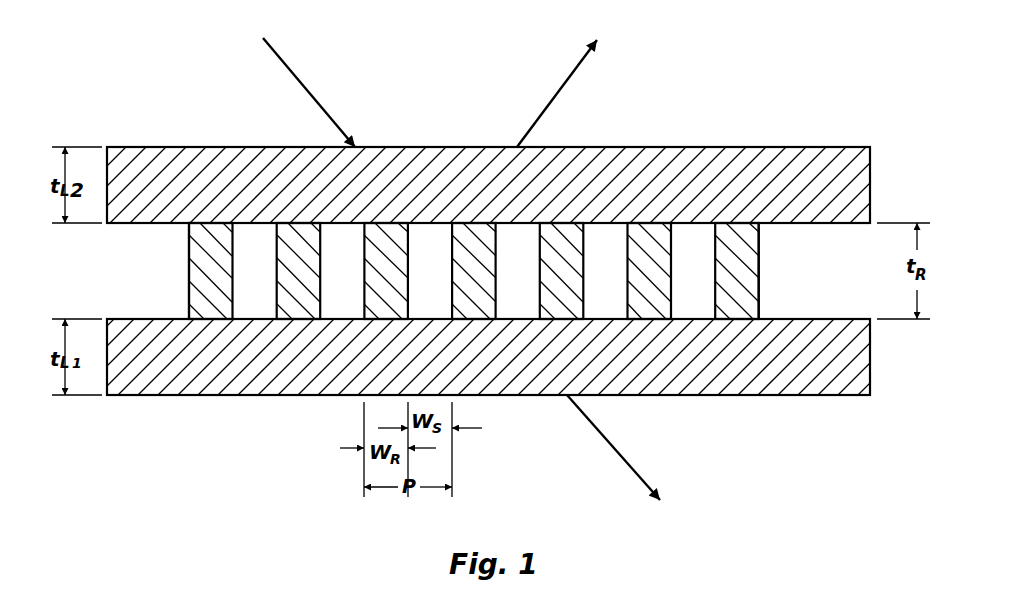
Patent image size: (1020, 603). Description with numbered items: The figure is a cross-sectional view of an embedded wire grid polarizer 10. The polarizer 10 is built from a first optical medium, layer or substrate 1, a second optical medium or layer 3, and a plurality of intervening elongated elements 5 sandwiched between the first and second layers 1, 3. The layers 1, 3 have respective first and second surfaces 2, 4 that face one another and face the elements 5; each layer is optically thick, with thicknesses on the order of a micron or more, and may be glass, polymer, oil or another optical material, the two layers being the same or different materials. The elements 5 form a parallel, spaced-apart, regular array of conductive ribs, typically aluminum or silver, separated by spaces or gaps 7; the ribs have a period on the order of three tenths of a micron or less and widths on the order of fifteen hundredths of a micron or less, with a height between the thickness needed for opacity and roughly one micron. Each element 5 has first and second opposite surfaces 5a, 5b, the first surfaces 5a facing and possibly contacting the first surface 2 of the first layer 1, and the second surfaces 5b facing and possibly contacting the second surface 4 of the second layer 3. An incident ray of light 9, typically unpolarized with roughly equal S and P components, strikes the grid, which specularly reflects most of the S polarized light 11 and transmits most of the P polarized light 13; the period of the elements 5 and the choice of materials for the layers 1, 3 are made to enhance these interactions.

The first optical layer 1 is at (745, 375).
The first surface 2 is at (125, 318).
The second optical layer 3 is at (623, 157).
The second surface 4 is at (123, 223).
The elongated elements 5 is at (735, 232).
The first surfaces 5a is at (745, 300).
The second surfaces 5b is at (207, 224).
The spaces 7 is at (247, 310).
The ray of light 9 is at (307, 82).
The embedded wire grid polarizer 10 is at (158, 103).
The S polarized light 11 is at (563, 75).
The P polarized light 13 is at (630, 464).